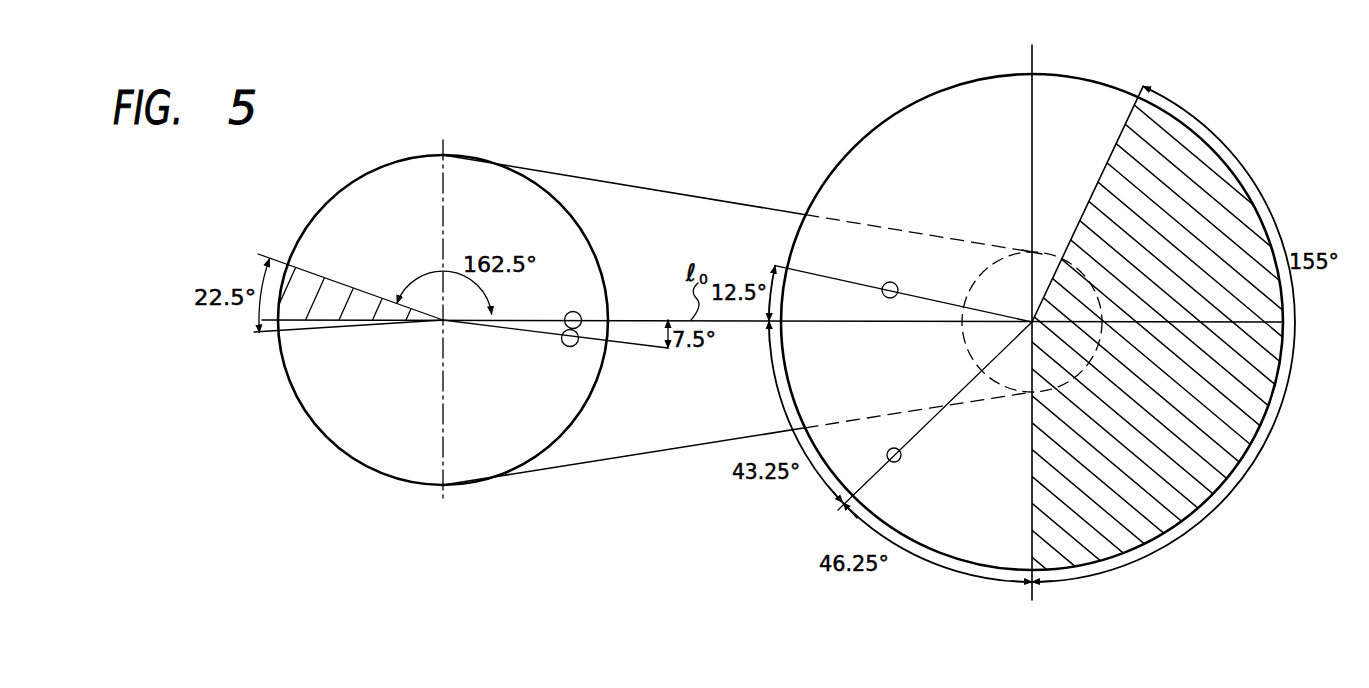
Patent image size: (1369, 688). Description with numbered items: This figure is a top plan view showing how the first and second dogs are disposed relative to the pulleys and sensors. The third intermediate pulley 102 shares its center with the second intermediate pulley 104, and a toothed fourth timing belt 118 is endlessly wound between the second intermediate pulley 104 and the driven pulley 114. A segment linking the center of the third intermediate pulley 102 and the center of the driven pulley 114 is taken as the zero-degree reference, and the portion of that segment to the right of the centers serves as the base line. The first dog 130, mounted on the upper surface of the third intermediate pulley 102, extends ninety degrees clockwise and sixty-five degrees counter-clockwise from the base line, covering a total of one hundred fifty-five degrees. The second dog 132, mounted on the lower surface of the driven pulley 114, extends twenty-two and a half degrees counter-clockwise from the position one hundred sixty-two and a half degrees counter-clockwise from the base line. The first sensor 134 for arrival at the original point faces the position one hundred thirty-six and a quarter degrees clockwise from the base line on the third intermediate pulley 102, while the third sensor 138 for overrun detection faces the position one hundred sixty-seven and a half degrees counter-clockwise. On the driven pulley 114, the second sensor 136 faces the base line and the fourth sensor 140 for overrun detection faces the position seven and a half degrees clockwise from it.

The third intermediate pulley 102 is at (893, 130).
The second intermediate pulley 104 is at (963, 343).
The driven pulley 114 is at (473, 470).
The fourth timing belt 118 is at (656, 452).
The first dog 130 is at (1183, 150).
The second dog 132 is at (308, 272).
The first sensor 134 is at (900, 457).
The second sensor 136 is at (575, 310).
The third sensor 138 is at (884, 283).
The fourth sensor 140 is at (574, 348).